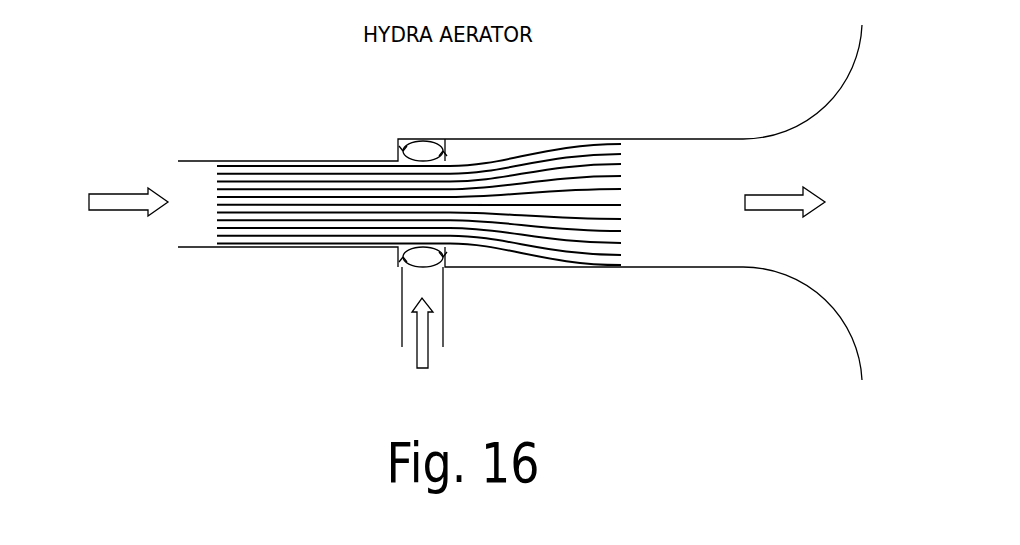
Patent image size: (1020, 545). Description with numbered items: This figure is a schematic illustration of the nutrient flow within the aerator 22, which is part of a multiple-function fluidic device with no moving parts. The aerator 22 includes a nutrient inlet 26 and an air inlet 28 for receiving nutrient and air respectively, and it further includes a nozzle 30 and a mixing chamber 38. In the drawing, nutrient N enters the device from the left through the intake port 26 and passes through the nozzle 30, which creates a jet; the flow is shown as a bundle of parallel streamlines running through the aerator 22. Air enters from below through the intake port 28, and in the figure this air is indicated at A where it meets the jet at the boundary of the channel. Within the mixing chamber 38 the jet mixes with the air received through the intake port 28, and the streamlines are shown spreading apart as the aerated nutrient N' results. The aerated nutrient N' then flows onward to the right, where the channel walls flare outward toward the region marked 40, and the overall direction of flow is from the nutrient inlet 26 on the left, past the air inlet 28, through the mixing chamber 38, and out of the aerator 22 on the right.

The aerator 22 is at (304, 136).
The nutrient inlet 26 is at (193, 193).
The air inlet 28 is at (422, 334).
The nozzle 30 is at (370, 250).
The mixing chamber 38 is at (419, 194).
The outlet expansion 40 is at (820, 114).
The nutrient N is at (419, 265).
The aerated nutrient N' is at (419, 145).
The air vortex A is at (425, 250).